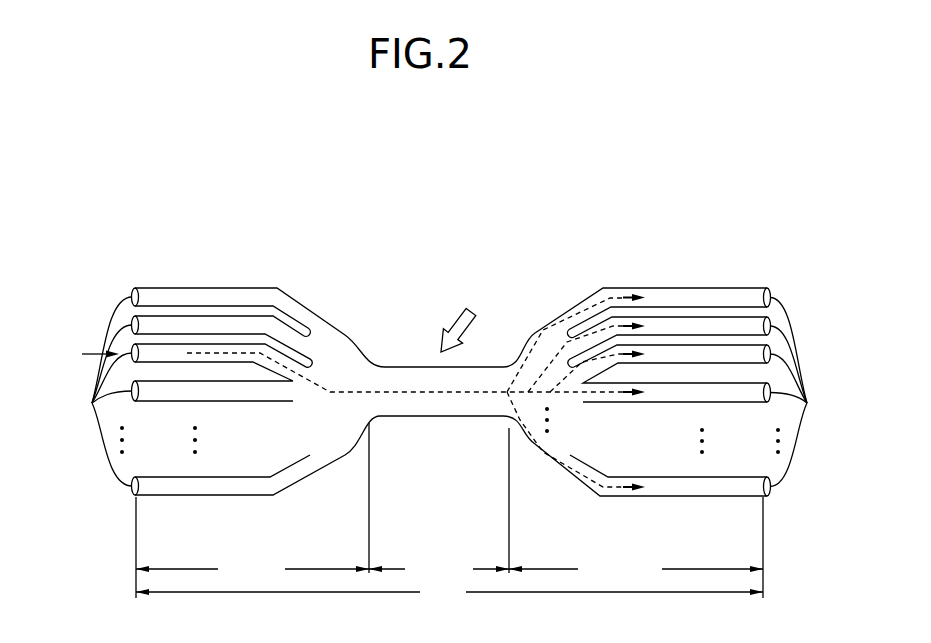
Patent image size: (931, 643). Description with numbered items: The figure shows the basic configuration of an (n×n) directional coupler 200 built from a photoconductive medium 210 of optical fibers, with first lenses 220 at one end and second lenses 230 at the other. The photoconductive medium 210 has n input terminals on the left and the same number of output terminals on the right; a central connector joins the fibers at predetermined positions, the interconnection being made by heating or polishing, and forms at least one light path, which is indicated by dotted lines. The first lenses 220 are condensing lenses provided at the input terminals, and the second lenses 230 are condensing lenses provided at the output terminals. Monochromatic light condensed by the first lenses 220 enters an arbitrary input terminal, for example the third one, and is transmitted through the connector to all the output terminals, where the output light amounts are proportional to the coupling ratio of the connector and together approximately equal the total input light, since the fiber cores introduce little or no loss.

The directional coupler 200 is at (392, 290).
The photoconductive medium 210 is at (449, 513).
The first lenses 220 is at (92, 391).
The second lenses 230 is at (808, 392).